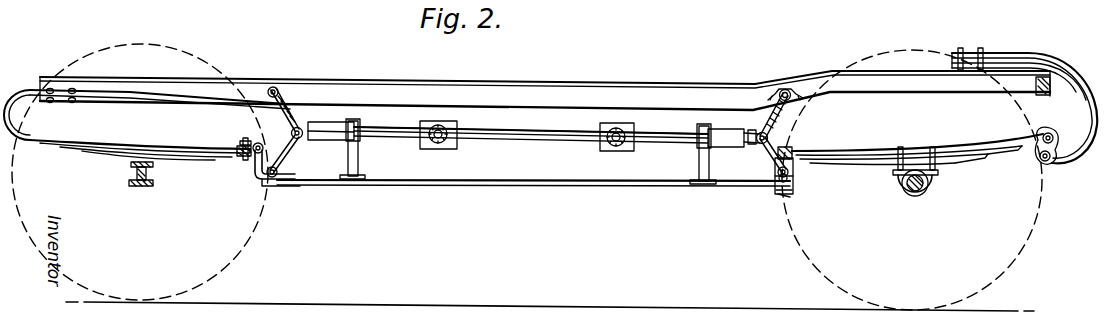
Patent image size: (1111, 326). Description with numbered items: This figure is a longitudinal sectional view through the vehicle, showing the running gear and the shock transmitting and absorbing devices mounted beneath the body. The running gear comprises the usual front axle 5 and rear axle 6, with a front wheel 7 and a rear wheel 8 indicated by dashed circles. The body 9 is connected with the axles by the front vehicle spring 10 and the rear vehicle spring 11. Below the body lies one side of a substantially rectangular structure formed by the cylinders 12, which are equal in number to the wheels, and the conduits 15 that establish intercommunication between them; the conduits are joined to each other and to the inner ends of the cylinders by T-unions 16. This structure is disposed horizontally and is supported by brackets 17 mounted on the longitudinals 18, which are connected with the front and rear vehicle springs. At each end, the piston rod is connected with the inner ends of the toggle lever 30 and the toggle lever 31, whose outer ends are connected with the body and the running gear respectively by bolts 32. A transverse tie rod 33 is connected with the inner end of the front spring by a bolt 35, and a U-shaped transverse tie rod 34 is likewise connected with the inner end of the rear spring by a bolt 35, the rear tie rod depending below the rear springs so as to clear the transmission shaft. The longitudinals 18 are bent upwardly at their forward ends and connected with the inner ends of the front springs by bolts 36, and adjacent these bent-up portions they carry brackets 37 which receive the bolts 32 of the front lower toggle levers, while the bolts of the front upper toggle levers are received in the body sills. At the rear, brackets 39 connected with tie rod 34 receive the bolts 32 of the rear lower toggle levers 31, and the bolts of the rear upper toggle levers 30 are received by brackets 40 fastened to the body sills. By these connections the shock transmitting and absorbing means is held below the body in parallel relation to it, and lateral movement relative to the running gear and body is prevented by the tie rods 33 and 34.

The front axle 5 is at (140, 187).
The rear axle 6 is at (929, 189).
The front wheels 7 is at (207, 59).
The rear wheels 8 is at (793, 248).
The body 9 is at (572, 92).
The front vehicle spring 10 is at (206, 160).
The rear vehicle spring 11 is at (960, 152).
The cylinders 12 is at (395, 122).
The conduits 15 is at (448, 141).
The T-unions 16 is at (612, 122).
The brackets 17 is at (358, 160).
The longitudinals 18 is at (541, 186).
The toggle lever 30 is at (300, 110).
The toggle lever 31 is at (285, 154).
The bolts 32 is at (279, 91).
The transverse tie rod 33 is at (234, 144).
The transverse tie rod 34 is at (790, 194).
The bolts 35 is at (245, 140).
The bolts 36 is at (256, 160).
The brackets 37 is at (283, 181).
The brackets 39 is at (791, 179).
The brackets 40 is at (783, 90).